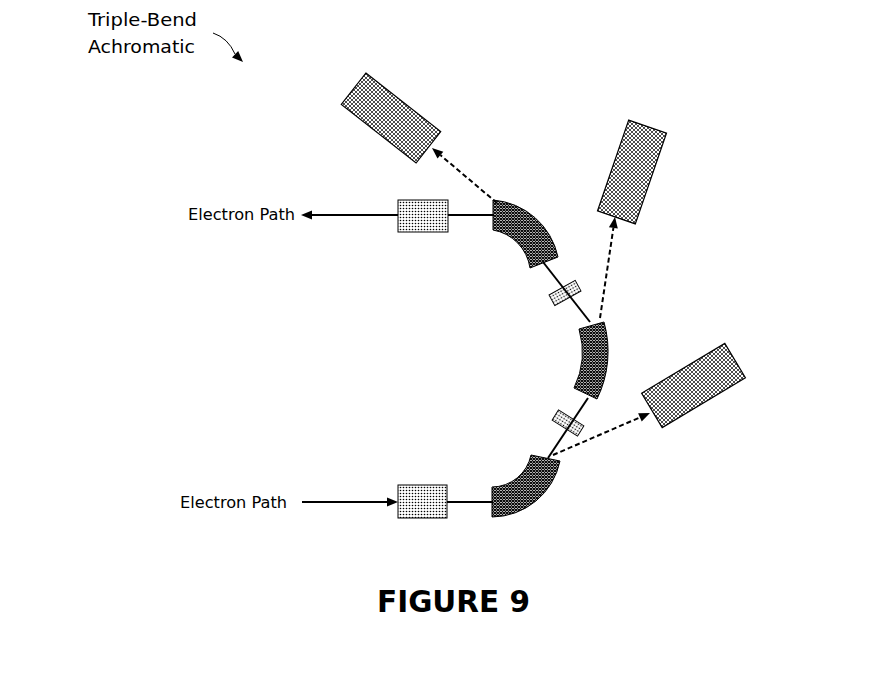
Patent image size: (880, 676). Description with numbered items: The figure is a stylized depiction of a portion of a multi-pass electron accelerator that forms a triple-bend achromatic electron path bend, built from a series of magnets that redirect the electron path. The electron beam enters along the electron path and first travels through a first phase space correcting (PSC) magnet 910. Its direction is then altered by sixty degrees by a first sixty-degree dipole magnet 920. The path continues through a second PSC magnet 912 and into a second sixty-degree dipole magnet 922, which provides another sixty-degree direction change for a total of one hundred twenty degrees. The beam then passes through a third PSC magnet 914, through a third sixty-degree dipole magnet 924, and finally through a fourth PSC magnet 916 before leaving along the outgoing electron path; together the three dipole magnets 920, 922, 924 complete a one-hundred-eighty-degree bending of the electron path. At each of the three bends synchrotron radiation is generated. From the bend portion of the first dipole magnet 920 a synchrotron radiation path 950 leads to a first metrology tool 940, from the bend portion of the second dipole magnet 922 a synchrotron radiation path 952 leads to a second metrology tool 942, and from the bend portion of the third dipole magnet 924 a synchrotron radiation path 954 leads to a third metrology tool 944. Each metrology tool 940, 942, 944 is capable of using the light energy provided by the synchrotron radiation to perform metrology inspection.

The first phase space correcting (PSC) magnet 910 is at (425, 485).
The second PSC magnet 912 is at (552, 417).
The third PSC magnet 914 is at (553, 307).
The fourth PSC magnet 916 is at (422, 233).
The first 60° dipole magnet 920 is at (510, 470).
The second 60° dipole magnet 922 is at (613, 362).
The third 60° dipole magnet 924 is at (512, 248).
The first metrology tool 940 is at (688, 360).
The second metrology tool 942 is at (603, 195).
The third metrology tool 944 is at (377, 132).
The synchrotron radiation path 950 is at (598, 440).
The synchrotron radiation path 952 is at (607, 255).
The synchrotron radiation path 954 is at (465, 175).